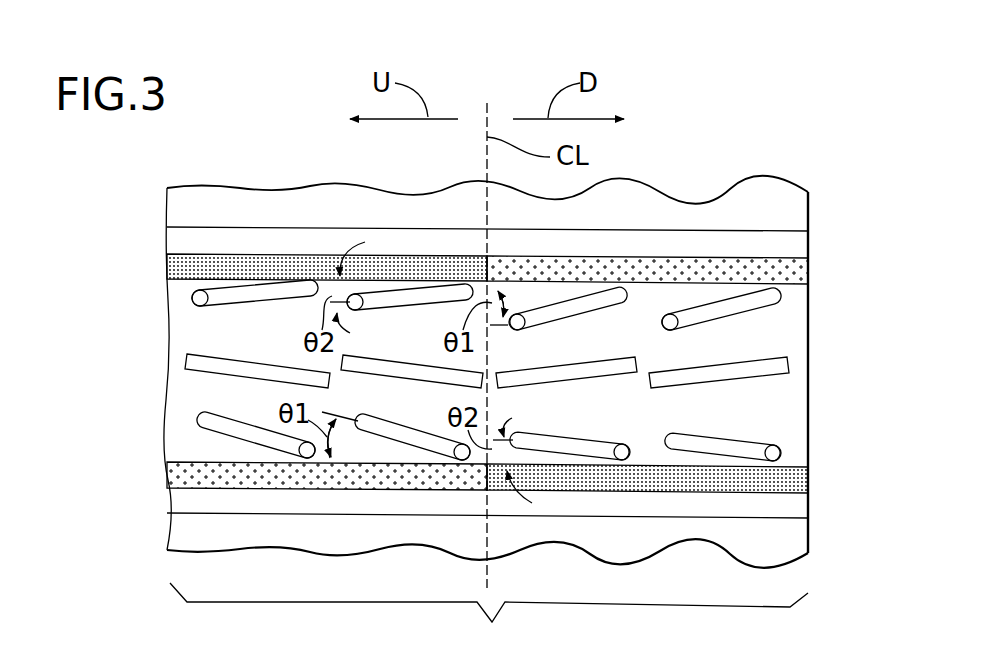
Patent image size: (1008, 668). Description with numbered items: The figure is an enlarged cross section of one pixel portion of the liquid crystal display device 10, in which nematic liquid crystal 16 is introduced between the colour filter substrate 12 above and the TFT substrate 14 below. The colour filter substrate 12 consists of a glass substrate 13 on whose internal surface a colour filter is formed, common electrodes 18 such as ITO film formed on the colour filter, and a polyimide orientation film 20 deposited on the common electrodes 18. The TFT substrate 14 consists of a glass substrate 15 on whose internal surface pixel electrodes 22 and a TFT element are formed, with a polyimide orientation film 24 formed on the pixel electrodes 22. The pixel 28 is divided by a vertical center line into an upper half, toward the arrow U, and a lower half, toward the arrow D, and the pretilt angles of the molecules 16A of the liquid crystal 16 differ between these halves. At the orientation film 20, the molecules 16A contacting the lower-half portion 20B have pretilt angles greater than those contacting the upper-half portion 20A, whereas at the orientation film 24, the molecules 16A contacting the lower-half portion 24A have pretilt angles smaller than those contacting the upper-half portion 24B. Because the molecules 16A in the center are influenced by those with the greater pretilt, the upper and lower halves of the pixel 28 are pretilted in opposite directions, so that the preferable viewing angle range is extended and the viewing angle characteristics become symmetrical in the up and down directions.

The liquid crystal display device 10 is at (142, 355).
The colour filter substrate 12 is at (877, 167).
The glass substrate 13 is at (802, 213).
The TFT substrate 14 is at (877, 455).
The glass substrate 15 is at (803, 533).
The nematic liquid crystal 16 is at (780, 408).
The molecules of the liquid crystal 16A is at (556, 313).
The common electrodes 18 is at (798, 245).
The polyimide orientation film 20 is at (798, 272).
The upper-half portion of orientation film 20A is at (287, 253).
The lower-half portion of orientation film 20B is at (667, 258).
The pixel electrodes 22 is at (800, 507).
The polyimide orientation film 24 is at (800, 480).
The lower-half portion of orientation film 24A is at (670, 493).
The upper-half portion of orientation film 24B is at (288, 488).
The pixel 28 is at (489, 620).